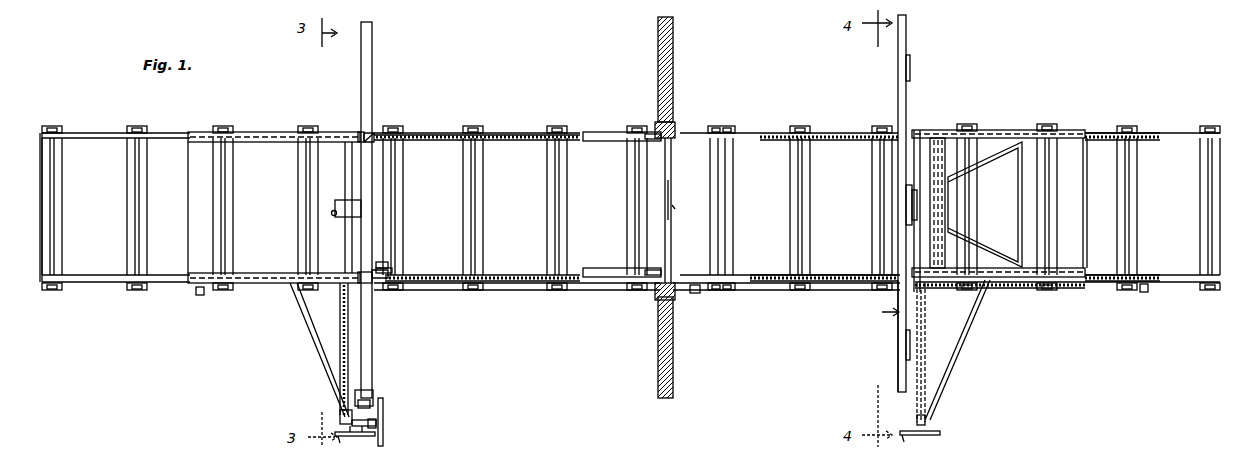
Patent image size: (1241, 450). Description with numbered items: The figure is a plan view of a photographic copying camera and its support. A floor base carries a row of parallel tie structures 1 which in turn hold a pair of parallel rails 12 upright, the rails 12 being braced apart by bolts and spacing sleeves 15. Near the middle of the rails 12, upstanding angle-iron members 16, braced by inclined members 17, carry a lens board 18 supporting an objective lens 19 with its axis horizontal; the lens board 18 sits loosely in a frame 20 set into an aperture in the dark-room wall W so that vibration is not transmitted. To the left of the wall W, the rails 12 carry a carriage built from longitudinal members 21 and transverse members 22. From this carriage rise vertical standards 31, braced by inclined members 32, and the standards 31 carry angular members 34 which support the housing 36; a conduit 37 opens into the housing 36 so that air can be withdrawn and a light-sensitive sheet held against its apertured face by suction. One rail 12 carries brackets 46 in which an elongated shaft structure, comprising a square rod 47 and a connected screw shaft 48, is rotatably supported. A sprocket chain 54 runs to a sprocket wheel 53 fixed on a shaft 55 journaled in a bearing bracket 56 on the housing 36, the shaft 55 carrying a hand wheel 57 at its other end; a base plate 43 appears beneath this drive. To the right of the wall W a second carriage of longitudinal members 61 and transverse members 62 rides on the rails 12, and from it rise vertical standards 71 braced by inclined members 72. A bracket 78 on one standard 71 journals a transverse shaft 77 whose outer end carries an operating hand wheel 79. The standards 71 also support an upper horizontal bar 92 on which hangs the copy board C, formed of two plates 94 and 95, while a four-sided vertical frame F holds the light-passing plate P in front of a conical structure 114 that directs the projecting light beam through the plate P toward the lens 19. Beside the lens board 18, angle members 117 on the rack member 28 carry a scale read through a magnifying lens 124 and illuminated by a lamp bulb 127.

The tie structure 1 is at (62, 186).
The rail 12 is at (88, 138).
The spacing sleeve 15 is at (62, 225).
The longitudinally extending member 21 is at (264, 132).
The inclined member 32 is at (272, 143).
The transverse member 22 is at (190, 198).
The conduit 37 is at (343, 200).
The housing 36 is at (361, 70).
The vertical member 31 is at (356, 132).
The upper angular member 34 is at (372, 135).
The lamp bulb 127 is at (388, 263).
The magnifying lens 124 is at (392, 270).
The rack member 28 is at (525, 142).
The angle member 117 is at (495, 274).
The rod 47 is at (505, 291).
The screw shaft 48 is at (745, 291).
The inclined member 17 is at (594, 142).
The upstanding member 16 is at (655, 140).
The frame 20 is at (657, 125).
The wall W is at (675, 72).
The lens board 18 is at (672, 255).
The objective lens 19 is at (672, 215).
The bracket 46 is at (198, 293).
The sprocket chain 54 is at (340, 366).
The sprocket wheel 53 is at (342, 420).
The bearing bracket 56 is at (370, 396).
The hand wheel 57 is at (384, 405).
The shaft 55 is at (378, 425).
The base plate 43 is at (376, 438).
The plate 94 is at (898, 63).
The plate 95 is at (898, 362).
The upper horizontal bar 92 is at (910, 68).
The frame F is at (908, 198).
The representation-bearing plate P is at (908, 214).
The copy board C is at (883, 313).
The vertical member 71 is at (917, 130).
The bracket 78 is at (926, 326).
The transverse shaft 77 is at (930, 378).
The operating hand wheel 79 is at (930, 430).
The longitudinally extending member 61 is at (998, 130).
The inclined member 72 is at (1010, 132).
The transverse member 62 is at (930, 145).
The conical structure 114 is at (985, 204).